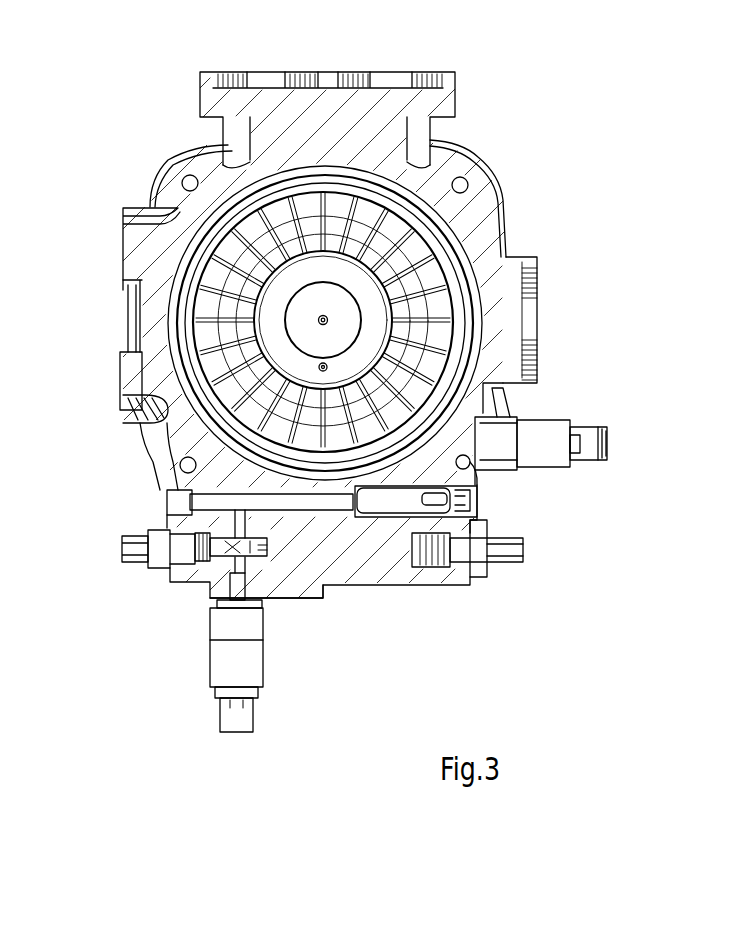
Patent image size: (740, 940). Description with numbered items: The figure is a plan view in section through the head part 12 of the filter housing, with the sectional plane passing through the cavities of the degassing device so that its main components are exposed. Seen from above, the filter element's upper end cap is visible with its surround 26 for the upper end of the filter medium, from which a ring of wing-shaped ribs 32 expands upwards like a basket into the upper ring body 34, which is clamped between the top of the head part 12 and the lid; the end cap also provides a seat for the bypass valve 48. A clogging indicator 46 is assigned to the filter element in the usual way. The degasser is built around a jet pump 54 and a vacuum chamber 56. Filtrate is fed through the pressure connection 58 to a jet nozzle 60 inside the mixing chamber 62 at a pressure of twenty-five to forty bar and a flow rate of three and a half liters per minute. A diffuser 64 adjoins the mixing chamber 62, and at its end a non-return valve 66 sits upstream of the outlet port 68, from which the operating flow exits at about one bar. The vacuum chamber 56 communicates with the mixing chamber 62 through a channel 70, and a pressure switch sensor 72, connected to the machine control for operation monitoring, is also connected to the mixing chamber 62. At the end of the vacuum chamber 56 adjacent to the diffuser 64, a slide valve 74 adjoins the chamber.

The head part 12 is at (153, 307).
The surround 26 is at (152, 212).
The wing-shaped ribs 32 is at (342, 152).
The upper ring body 34 is at (445, 272).
The clogging indicator 46 is at (548, 428).
The bypass valve 48 is at (273, 330).
The jet pump 54 is at (250, 556).
The vacuum chamber 56 is at (265, 498).
The pressure connection 58 is at (135, 552).
The jet nozzle 60 is at (228, 560).
The mixing chamber 62 is at (243, 565).
The diffuser 64 is at (378, 548).
The non-return valve 66 is at (433, 553).
The outlet port 68 is at (515, 562).
The channel 70 is at (247, 523).
The pressure switch sensor 72 is at (252, 673).
The slide valve 74 is at (393, 486).